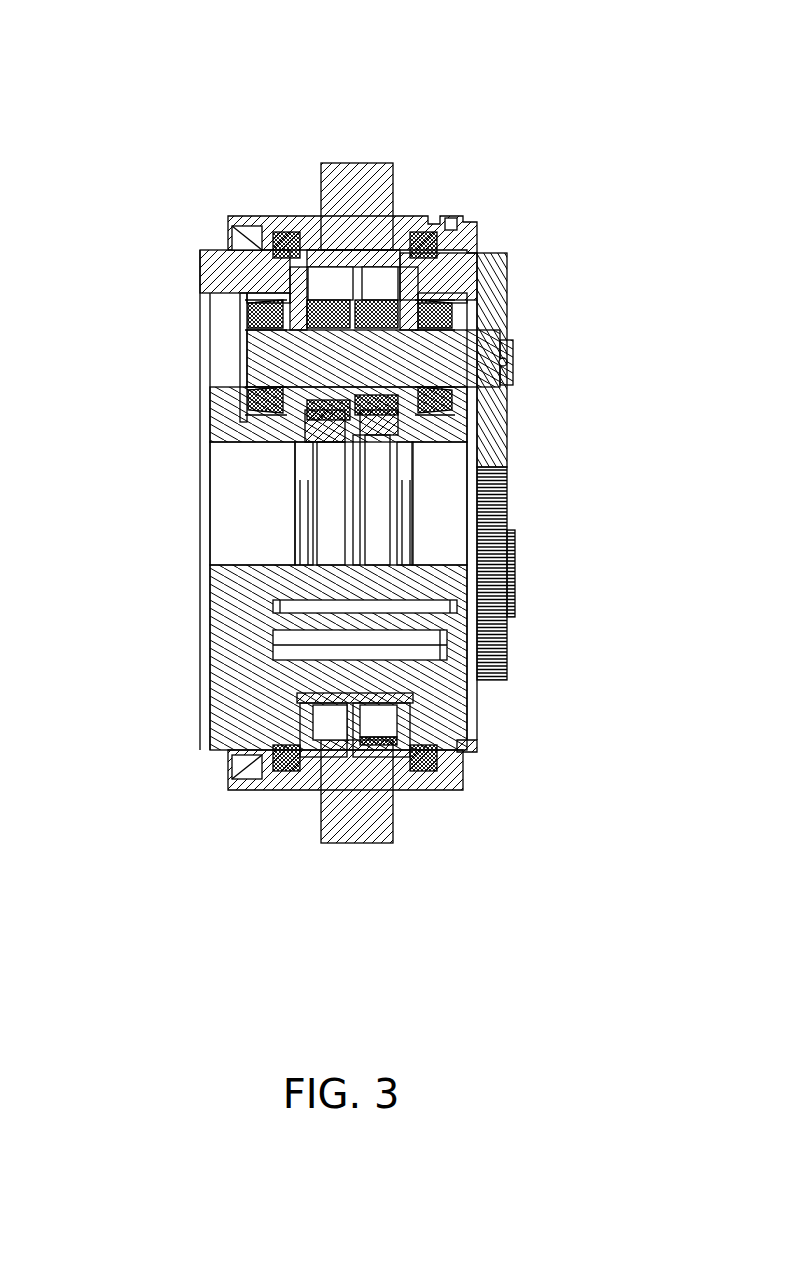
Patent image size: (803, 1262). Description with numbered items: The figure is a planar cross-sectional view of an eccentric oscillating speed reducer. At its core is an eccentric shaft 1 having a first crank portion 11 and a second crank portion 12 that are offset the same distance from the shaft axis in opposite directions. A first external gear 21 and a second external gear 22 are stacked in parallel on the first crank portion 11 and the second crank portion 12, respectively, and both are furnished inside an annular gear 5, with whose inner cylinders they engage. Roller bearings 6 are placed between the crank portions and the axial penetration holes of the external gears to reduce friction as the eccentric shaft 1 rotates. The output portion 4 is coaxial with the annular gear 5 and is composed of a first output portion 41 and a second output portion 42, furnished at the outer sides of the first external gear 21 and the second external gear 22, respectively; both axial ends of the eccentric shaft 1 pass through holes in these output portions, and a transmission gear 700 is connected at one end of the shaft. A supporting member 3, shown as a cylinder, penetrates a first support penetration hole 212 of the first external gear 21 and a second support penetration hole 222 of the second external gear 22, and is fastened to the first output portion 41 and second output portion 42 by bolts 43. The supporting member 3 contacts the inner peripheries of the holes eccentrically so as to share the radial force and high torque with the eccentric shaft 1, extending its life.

The eccentric shaft 1 is at (253, 348).
The supporting member 3 is at (412, 648).
The output portion 4 is at (497, 40).
The annular gear 5 is at (358, 195).
The roller bearing 6 is at (243, 310).
The first crank portion 11 is at (243, 325).
The second crank portion 12 is at (392, 323).
The first external gear 21 is at (323, 263).
The second external gear 22 is at (378, 272).
The first output portion 41 is at (443, 255).
The second output portion 42 is at (213, 258).
The bolt 43 is at (225, 610).
The first support penetration hole 212 is at (327, 718).
The second support penetration hole 222 is at (367, 700).
The transmission gear 700 is at (492, 253).